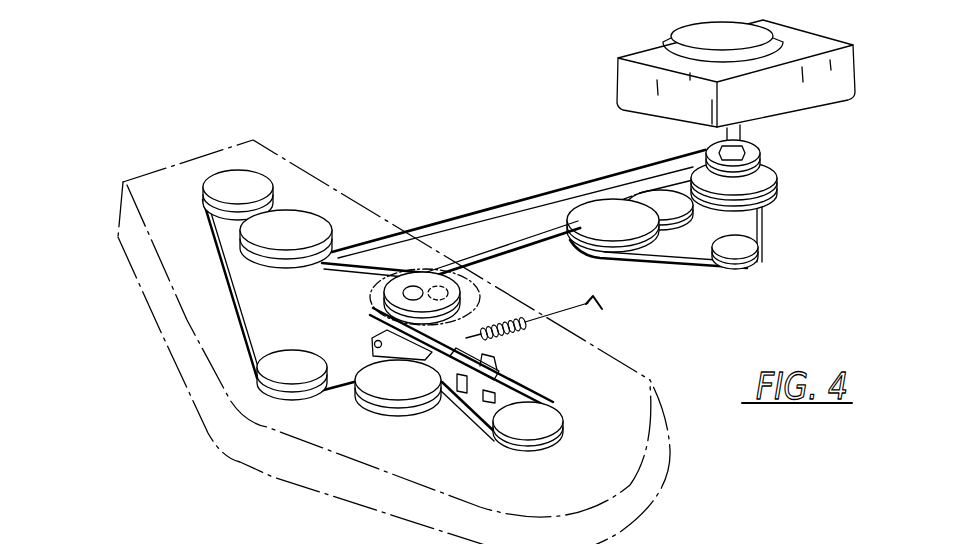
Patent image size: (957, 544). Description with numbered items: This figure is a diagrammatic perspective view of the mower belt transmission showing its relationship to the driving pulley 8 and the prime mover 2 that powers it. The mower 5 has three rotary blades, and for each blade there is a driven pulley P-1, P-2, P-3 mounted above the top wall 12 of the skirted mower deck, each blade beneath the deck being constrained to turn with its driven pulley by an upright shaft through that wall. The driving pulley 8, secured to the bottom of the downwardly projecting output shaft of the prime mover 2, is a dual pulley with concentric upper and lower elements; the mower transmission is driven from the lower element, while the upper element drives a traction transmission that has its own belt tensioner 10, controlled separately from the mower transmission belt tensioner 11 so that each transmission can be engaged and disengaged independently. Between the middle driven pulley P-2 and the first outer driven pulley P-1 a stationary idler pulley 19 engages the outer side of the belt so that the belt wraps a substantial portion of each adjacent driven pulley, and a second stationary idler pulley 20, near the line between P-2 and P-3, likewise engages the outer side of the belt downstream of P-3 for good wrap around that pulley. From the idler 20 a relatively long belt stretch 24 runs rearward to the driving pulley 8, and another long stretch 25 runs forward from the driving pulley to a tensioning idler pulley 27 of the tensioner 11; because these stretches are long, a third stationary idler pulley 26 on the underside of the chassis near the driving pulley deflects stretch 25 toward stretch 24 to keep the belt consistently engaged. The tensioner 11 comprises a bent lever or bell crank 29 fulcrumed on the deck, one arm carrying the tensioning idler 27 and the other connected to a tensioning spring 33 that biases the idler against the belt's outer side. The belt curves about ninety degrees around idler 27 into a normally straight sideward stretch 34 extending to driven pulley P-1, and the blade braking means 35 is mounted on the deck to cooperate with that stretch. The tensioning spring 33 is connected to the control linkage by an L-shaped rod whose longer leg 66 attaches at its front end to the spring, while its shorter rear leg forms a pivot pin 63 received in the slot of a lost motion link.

The motor 2 is at (655, 38).
The mower 5 is at (120, 187).
The driving pulley 8 is at (770, 170).
The belt tensioner 10 is at (774, 226).
The mower transmission belt tensioner 11 is at (357, 305).
The top wall of mower deck 12 is at (645, 400).
The stationary idler pulley 19 is at (390, 393).
The second stationary idler pulley 20 is at (313, 223).
The belt stretch 24 is at (509, 204).
The belt stretch 25 is at (504, 250).
The third stationary idler pulley 26 is at (677, 206).
The tensioning idler pulley 27 is at (382, 281).
The bent lever or bell crank 29 is at (372, 334).
The tensioning spring 33 is at (526, 333).
The belt stretch 34 is at (530, 394).
The blade braking means 35 is at (525, 372).
The pivot pin 63 is at (612, 298).
The longer leg of L-shaped rod 66 is at (590, 298).
The driven pulley P-1 is at (547, 415).
The driven pulley P-2 is at (280, 360).
The driven pulley P-3 is at (258, 181).